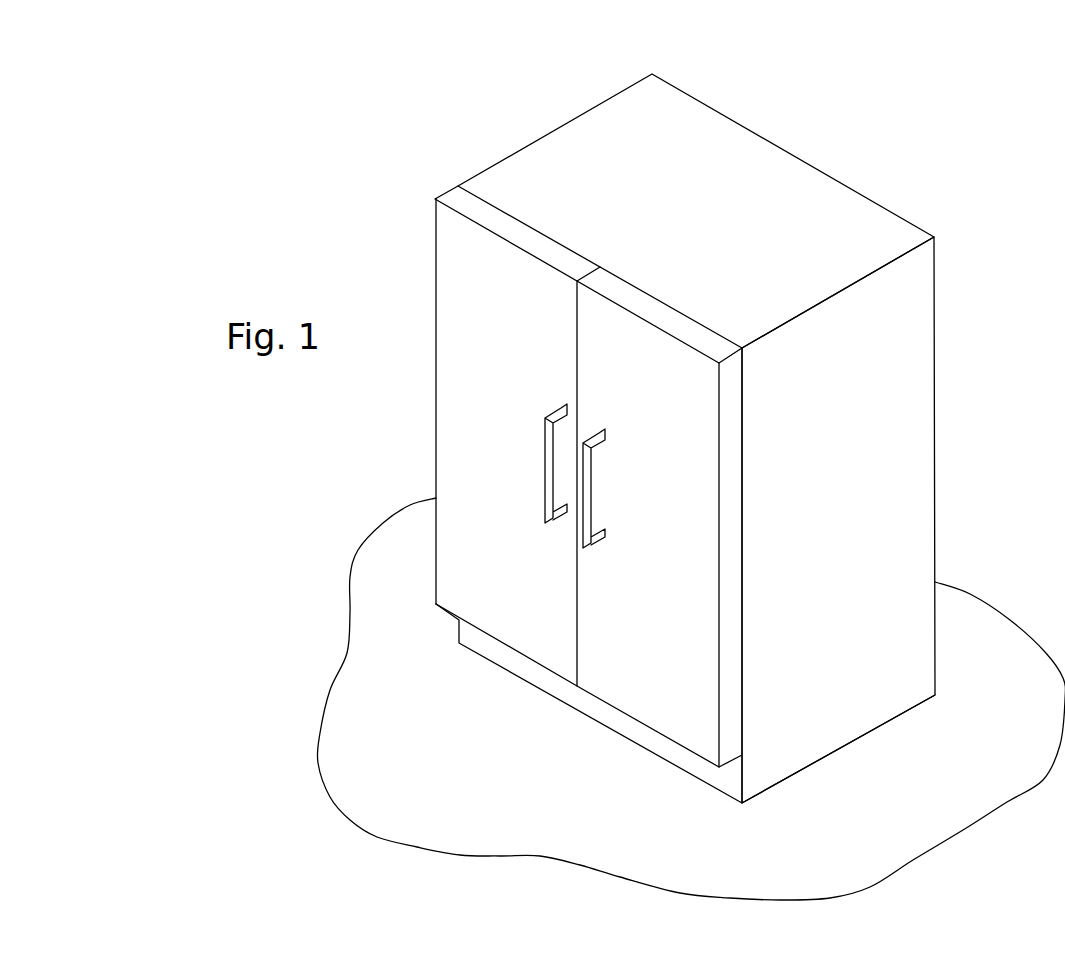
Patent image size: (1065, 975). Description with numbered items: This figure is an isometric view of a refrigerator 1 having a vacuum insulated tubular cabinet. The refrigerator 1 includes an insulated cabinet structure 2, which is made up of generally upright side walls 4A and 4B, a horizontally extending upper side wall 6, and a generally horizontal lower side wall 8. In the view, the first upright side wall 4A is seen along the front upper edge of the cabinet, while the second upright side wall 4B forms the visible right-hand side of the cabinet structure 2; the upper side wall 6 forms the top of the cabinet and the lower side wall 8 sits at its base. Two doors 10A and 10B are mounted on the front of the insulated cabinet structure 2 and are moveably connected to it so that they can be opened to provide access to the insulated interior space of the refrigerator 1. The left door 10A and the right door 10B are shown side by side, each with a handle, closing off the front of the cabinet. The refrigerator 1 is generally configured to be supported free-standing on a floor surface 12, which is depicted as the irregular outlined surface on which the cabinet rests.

The refrigerator 1 is at (963, 276).
The insulated cabinet structure 2 is at (935, 390).
The side wall 4A is at (502, 158).
The side wall 4B is at (888, 502).
The upper side wall 6 is at (758, 175).
The lower side wall 8 is at (910, 710).
The door 10A is at (457, 428).
The door 10B is at (660, 699).
The floor surface 12 is at (968, 790).